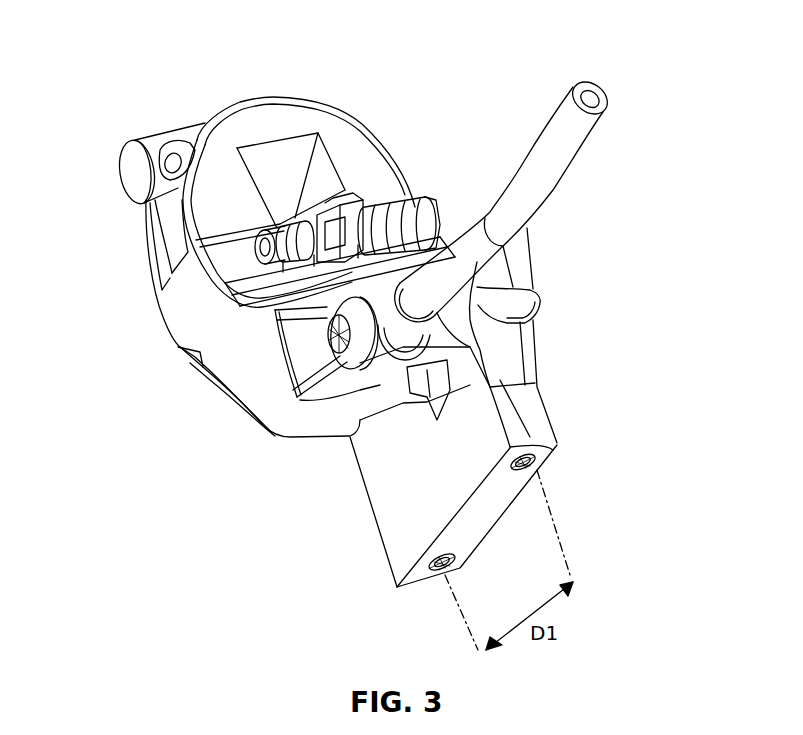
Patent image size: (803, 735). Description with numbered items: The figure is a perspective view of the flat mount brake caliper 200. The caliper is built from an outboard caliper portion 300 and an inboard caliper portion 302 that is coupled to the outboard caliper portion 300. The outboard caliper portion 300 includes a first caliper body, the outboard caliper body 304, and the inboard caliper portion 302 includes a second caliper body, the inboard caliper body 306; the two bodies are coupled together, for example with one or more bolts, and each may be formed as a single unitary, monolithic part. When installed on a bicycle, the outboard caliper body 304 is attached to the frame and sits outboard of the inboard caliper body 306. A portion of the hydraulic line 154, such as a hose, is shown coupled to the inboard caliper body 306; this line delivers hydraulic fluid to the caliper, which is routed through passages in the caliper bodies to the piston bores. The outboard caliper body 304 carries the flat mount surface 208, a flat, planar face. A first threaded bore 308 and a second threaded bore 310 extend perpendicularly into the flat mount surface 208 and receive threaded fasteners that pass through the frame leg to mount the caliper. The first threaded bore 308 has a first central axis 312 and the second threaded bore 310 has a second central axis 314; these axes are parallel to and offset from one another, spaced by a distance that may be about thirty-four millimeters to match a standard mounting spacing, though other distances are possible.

The flat mount brake caliper 200 is at (118, 37).
The outboard caliper portion 300 is at (392, 95).
The inboard caliper portion 302 is at (133, 117).
The outboard caliper body 304 is at (385, 178).
The inboard caliper body 306 is at (207, 303).
The hydraulic line 154 is at (562, 157).
The flat mount surface 208 is at (480, 515).
The first threaded bore 308 is at (538, 466).
The second threaded bore 310 is at (435, 572).
The first central axis 312 is at (553, 537).
The second central axis 314 is at (464, 632).